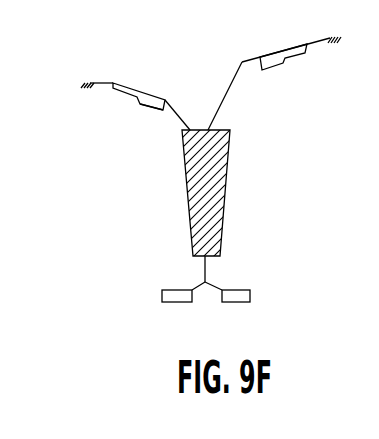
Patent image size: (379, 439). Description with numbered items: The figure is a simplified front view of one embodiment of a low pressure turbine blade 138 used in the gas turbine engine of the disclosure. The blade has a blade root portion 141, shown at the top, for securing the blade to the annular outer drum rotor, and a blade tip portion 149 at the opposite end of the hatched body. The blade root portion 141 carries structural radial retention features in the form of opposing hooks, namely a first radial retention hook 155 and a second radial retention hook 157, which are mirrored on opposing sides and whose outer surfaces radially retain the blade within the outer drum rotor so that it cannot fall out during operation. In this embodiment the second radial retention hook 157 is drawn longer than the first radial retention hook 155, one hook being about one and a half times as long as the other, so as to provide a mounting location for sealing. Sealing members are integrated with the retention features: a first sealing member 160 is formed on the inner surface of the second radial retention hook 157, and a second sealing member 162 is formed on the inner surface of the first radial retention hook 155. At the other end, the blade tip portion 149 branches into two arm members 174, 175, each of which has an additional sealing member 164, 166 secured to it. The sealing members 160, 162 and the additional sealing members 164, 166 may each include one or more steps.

The low pressure turbine blade 138 is at (252, 191).
The blade root portion 141 is at (124, 118).
The blade tip portion 149 is at (175, 271).
The first radial retention hook 155 is at (103, 82).
The second radial retention hook 157 is at (226, 100).
The first sealing member 160 is at (294, 60).
The second sealing member 162 is at (151, 115).
The additional sealing member 164 is at (159, 303).
The additional sealing member 166 is at (238, 303).
The arm member 174 is at (196, 287).
The arm member 175 is at (216, 283).